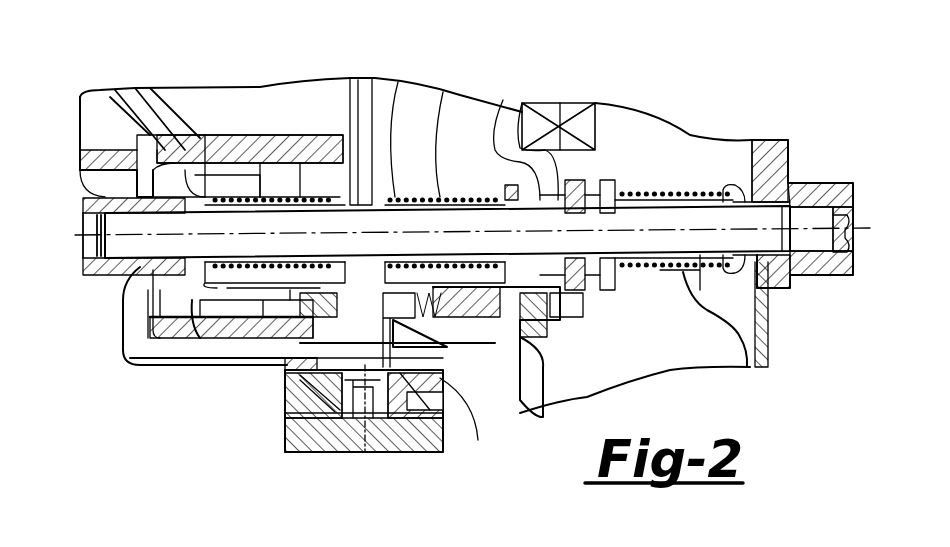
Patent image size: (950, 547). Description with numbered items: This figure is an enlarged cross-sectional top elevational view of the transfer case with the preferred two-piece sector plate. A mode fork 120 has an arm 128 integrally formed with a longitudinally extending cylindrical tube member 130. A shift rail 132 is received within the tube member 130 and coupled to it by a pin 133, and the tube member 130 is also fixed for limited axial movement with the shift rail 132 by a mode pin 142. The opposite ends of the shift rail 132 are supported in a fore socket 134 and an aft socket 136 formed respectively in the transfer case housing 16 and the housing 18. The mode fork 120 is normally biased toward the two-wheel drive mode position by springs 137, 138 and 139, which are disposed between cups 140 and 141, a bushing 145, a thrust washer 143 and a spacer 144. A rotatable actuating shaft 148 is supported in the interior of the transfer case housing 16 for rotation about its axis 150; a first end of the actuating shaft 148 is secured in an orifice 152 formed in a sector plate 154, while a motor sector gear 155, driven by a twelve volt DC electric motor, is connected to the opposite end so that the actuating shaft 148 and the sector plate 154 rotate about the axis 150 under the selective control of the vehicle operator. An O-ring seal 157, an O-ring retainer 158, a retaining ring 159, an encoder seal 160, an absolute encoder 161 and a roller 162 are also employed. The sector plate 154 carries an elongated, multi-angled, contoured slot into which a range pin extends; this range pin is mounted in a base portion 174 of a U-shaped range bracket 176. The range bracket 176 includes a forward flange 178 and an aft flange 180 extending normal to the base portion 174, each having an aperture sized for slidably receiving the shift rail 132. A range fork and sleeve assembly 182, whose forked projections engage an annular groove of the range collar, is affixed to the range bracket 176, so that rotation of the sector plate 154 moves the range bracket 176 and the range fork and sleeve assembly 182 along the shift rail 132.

The transfer case housing 16 is at (190, 323).
The housing 18 is at (833, 272).
The mode fork 120 is at (561, 103).
The arm 128 is at (528, 105).
The tube member 130 is at (700, 217).
The shift rail 132 is at (703, 207).
The pin 133 is at (610, 284).
The fore socket 134 is at (83, 265).
The aft socket 136 is at (828, 210).
The spring 137 is at (745, 365).
The spring 138 is at (443, 95).
The spring 139 is at (225, 135).
The cup 140 is at (740, 266).
The cup 141 is at (203, 305).
The mode pin 142 is at (583, 190).
The thrust washer 143 is at (400, 85).
The spacer 144 is at (303, 163).
The bushing 145 is at (500, 185).
The actuating shaft 148 is at (290, 353).
The axis 150 is at (360, 456).
The orifice 152 is at (270, 333).
The sector plate 154 is at (155, 365).
The motor sector gear 155 is at (295, 379).
The O-ring seal 157 is at (290, 428).
The O-ring retainer 158 is at (405, 430).
The retaining ring 159 is at (470, 400).
The encoder seal 160 is at (320, 423).
The absolute encoder 161 is at (380, 443).
The roller 162 is at (215, 358).
The base portion 174 is at (262, 163).
The range bracket 176 is at (523, 397).
The forward flange 178 is at (175, 150).
The aft flange 180 is at (638, 194).
The range fork and sleeve assembly 182 is at (366, 95).